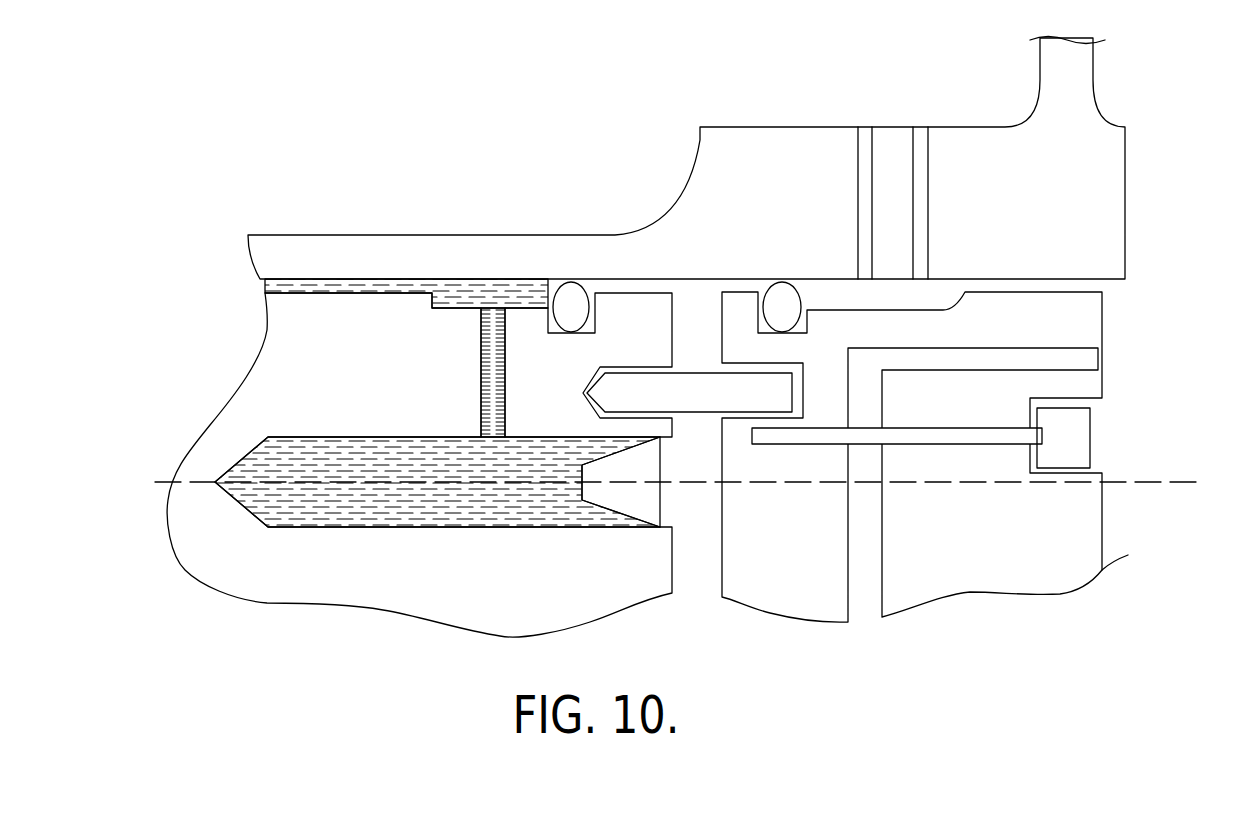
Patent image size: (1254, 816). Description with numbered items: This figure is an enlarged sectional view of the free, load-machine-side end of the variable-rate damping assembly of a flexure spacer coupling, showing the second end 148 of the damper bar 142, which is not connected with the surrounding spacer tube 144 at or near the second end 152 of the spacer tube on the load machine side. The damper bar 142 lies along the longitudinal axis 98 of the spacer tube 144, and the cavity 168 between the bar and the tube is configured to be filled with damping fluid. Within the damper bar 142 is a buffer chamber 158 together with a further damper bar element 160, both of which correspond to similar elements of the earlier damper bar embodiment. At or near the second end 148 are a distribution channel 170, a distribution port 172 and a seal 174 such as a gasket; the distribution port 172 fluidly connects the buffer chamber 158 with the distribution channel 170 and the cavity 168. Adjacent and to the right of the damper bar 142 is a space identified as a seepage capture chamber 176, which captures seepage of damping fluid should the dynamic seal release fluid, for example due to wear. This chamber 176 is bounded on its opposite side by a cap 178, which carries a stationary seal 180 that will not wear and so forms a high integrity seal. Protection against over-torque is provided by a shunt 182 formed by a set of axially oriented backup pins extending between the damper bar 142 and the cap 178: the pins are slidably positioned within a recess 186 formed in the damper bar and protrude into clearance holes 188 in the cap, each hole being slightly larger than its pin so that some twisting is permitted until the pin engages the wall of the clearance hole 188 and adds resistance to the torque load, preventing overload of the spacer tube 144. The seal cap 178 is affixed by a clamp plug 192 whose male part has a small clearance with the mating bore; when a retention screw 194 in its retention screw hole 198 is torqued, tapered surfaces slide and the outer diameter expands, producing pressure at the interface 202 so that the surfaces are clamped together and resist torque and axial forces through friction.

The longitudinal axis 98 is at (315, 483).
The damper bar 142 is at (310, 407).
The spacer tube 144 is at (270, 263).
The second end of damper bar 148 is at (630, 315).
The second end of spacer tube 152 is at (995, 180).
The buffer chamber 158 is at (400, 505).
The damper bar element 160 is at (607, 488).
The cavity 168 is at (330, 283).
The distribution channel 170 is at (463, 300).
The distribution port 172 is at (493, 337).
The seal 174 is at (572, 303).
The seepage capture chamber 176 is at (686, 562).
The cap 178 is at (787, 558).
The stationary seal 180 is at (787, 303).
The shunt 182 is at (695, 398).
The recess 186 is at (582, 395).
The clearance hole 188 is at (803, 392).
The clamp plug 192 is at (1037, 532).
The retention screw 194 is at (1067, 438).
The retention screw hole 198 is at (967, 443).
The interface 202 is at (1050, 283).